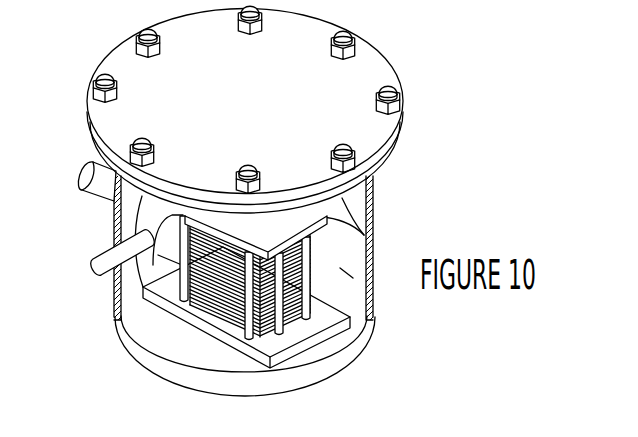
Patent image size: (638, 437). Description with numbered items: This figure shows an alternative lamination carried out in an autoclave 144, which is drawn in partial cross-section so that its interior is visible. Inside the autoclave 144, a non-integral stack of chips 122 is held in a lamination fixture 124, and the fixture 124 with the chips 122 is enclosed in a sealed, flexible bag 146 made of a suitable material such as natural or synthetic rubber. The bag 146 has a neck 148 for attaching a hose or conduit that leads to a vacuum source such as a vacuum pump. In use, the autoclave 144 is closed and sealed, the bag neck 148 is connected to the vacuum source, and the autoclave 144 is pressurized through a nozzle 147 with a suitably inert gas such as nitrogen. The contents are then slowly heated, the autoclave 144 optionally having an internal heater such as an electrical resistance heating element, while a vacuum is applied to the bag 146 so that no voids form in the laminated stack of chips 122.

The autoclave 144 is at (408, 39).
The lamination fixture 124 is at (360, 204).
The flexible bag 146 is at (343, 248).
The stack of chips 122 is at (198, 272).
The nozzle 147 is at (88, 168).
The bag neck 148 is at (108, 258).